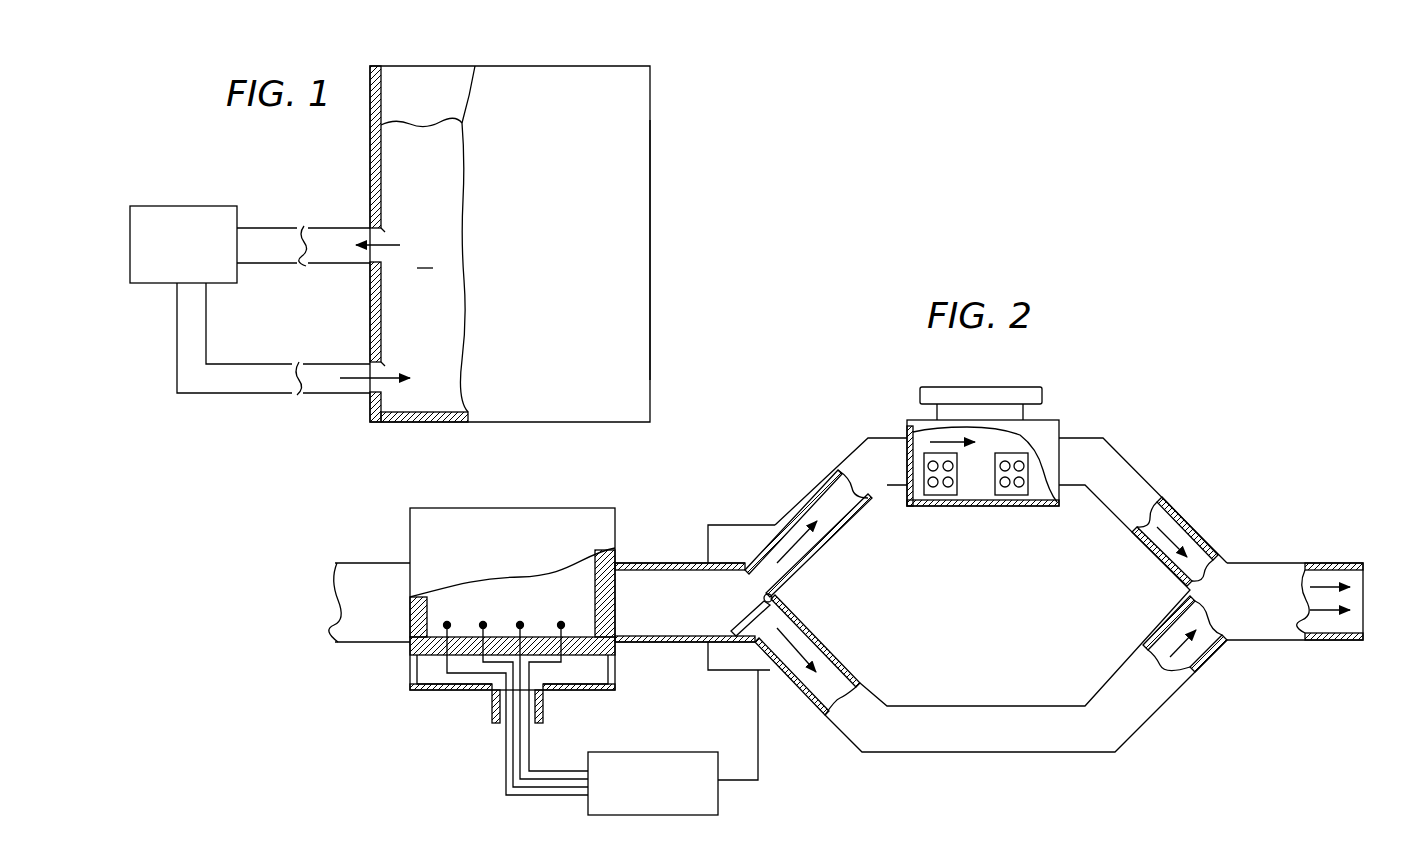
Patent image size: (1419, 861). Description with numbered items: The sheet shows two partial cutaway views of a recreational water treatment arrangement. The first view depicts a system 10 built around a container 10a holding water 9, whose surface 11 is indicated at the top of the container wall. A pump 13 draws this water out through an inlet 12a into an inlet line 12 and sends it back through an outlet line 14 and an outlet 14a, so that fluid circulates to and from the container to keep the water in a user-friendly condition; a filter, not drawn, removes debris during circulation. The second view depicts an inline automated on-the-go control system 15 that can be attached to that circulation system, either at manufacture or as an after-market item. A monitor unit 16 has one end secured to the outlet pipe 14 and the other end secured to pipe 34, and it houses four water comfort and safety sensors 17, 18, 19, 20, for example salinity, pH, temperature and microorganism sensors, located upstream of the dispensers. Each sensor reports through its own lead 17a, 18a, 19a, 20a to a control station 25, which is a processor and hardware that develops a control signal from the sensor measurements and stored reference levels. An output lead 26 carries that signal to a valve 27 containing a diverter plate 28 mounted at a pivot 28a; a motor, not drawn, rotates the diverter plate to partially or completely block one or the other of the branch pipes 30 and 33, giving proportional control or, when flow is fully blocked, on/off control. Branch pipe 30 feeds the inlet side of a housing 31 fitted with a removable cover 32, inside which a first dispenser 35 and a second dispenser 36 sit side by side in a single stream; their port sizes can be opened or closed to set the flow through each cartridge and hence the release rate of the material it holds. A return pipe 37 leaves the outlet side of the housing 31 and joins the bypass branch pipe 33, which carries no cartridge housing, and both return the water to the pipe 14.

In FIG. 1, the liquid 9 is at (386, 311).
In FIG. 1, the system 10 is at (698, 124).
In FIG. 1, the container 10a is at (651, 215).
In FIG. 1, the liquid level 11 is at (428, 120).
In FIG. 1, the inlet line 12 is at (272, 228).
In FIG. 1, the inlet 12a is at (385, 232).
In FIG. 1, the pump 13 is at (189, 206).
In FIG. 1, the outlet line 14 is at (265, 395).
In FIG. 2, the outlet line 14 is at (370, 562).
In FIG. 1, the outlet 14a is at (383, 366).
In FIG. 2, the control system 15 is at (1248, 452).
In FIG. 2, the monitor unit 16 is at (530, 508).
In FIG. 2, the sensor 17 is at (448, 620).
In FIG. 2, the sensor 18 is at (484, 620).
In FIG. 2, the sensor 19 is at (521, 620).
In FIG. 2, the sensor 20 is at (562, 620).
In FIG. 2, the lead 17a is at (507, 768).
In FIG. 2, the lead 18a is at (540, 788).
In FIG. 2, the lead 19a is at (522, 740).
In FIG. 2, the lead 20a is at (555, 768).
In FIG. 2, the control station 25 is at (667, 815).
In FIG. 2, the output lead 26 is at (762, 740).
In FIG. 2, the valve 27 is at (740, 672).
In FIG. 2, the diverter plate 28 is at (740, 618).
In FIG. 2, the valve pivot 28a is at (778, 598).
In FIG. 2, the branch pipe 30 is at (793, 507).
In FIG. 2, the housing 31 is at (1060, 420).
In FIG. 2, the removable cover 32 is at (965, 388).
In FIG. 2, the branch pipe 33 is at (837, 650).
In FIG. 2, the pipe 34 is at (655, 560).
In FIG. 2, the first dispenser 35 is at (935, 487).
In FIG. 2, the second dispenser 36 is at (1010, 487).
In FIG. 2, the return pipe 37 is at (1143, 472).